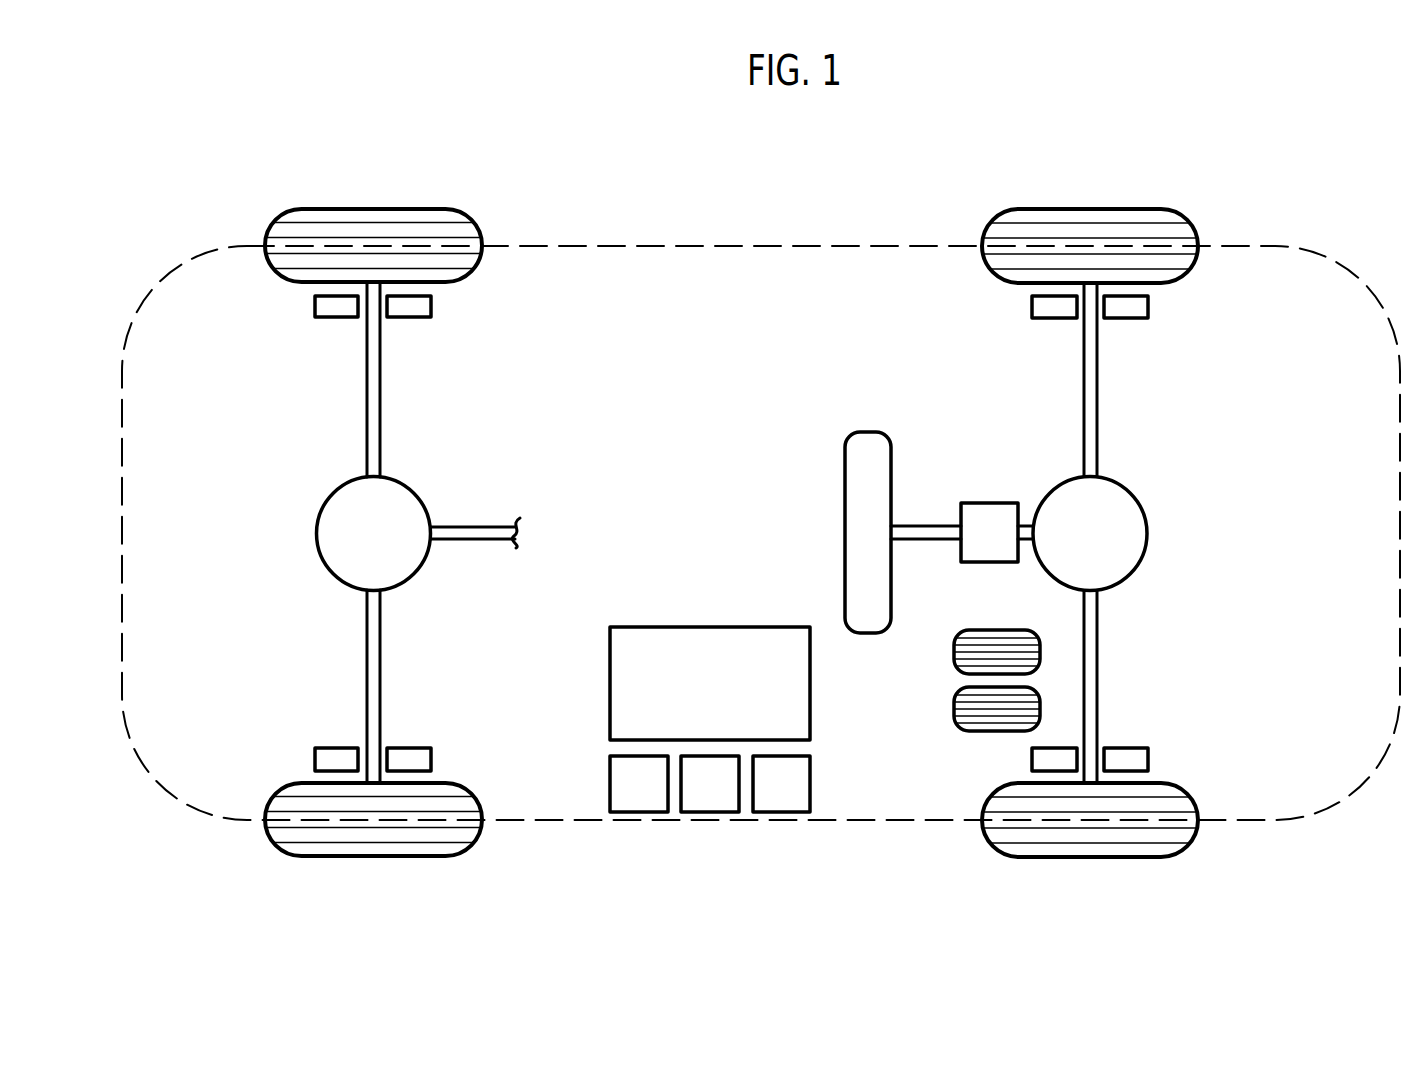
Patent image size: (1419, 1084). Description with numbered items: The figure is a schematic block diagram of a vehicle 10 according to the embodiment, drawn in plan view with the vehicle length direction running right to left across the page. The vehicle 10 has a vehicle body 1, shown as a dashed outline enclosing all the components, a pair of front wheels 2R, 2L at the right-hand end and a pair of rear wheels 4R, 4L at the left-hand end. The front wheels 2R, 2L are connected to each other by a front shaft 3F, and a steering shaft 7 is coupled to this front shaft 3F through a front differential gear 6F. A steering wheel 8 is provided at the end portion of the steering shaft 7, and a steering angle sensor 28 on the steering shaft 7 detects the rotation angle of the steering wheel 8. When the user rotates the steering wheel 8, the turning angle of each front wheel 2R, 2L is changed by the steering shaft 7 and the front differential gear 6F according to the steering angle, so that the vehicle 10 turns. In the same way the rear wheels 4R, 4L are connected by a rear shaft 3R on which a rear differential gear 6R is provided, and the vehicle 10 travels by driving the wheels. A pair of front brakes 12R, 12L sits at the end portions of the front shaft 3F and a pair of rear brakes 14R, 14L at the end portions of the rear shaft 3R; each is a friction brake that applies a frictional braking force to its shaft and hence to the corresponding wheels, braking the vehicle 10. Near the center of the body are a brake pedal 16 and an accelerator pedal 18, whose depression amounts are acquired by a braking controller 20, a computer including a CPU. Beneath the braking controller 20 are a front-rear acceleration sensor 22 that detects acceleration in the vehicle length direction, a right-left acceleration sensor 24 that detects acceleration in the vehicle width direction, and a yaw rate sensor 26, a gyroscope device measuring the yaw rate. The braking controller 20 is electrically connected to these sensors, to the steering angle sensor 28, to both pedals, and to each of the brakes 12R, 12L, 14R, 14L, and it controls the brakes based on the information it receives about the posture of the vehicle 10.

The vehicle 10 is at (1328, 188).
The vehicle body 1 is at (724, 243).
The front wheel 2L is at (1088, 207).
The front wheel 2R is at (1090, 858).
The rear wheel 4L is at (372, 207).
The rear wheel 4R is at (372, 858).
The front shaft 3F is at (1090, 393).
The rear shaft 3R is at (372, 393).
The front differential gear 6F is at (1133, 535).
The rear differential gear 6R is at (330, 535).
The steering shaft 7 is at (925, 533).
The steering wheel 8 is at (857, 490).
The steering angle sensor 28 is at (990, 520).
The front brake 12L is at (1133, 306).
The front brake 12R is at (1133, 760).
The rear brake 14L is at (332, 305).
The rear brake 14R is at (330, 760).
The brake pedal 16 is at (968, 655).
The accelerator pedal 18 is at (968, 712).
The braking controller 20 is at (710, 640).
The front-rear acceleration sensor 22 is at (638, 798).
The right-left acceleration sensor 24 is at (710, 798).
The yaw rate sensor 26 is at (782, 798).